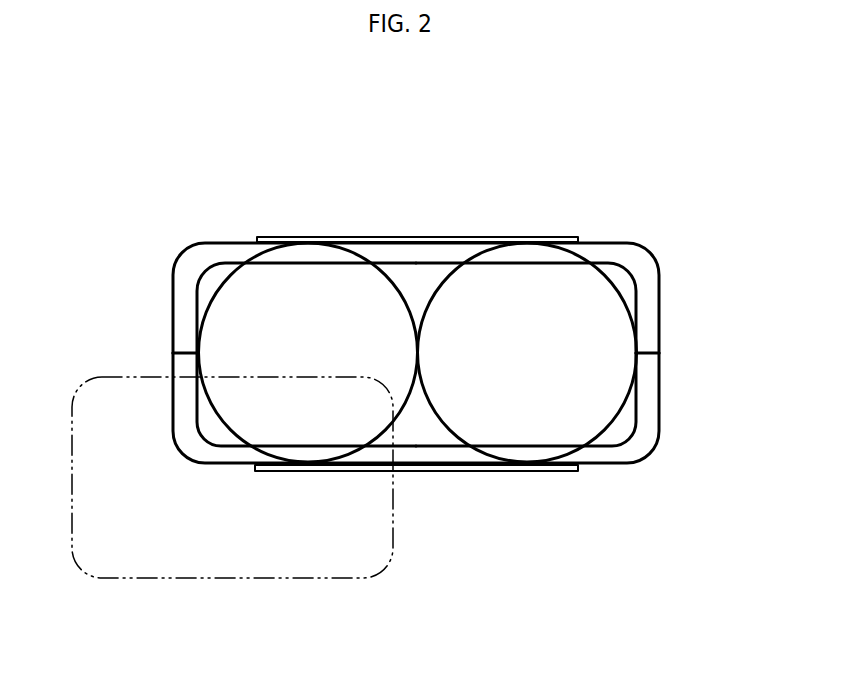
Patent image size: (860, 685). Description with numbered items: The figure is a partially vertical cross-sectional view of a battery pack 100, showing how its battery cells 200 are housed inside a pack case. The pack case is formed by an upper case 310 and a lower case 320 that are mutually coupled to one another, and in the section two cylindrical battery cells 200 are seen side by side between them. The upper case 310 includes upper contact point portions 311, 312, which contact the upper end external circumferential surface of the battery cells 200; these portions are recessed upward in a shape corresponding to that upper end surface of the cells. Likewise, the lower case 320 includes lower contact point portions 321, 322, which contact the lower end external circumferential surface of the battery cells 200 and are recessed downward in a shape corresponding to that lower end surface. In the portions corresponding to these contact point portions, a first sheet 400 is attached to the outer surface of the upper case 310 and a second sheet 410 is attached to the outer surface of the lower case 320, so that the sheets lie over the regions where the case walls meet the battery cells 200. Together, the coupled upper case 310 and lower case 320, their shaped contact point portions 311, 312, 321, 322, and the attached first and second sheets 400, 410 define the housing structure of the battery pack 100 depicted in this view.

The battery pack 100 is at (121, 137).
The battery cell 200 is at (220, 330).
The upper case 310 is at (210, 252).
The upper contact point portion 311 is at (307, 242).
The upper contact point portion 312 is at (527, 240).
The lower case 320 is at (210, 452).
The lower contact point portion 321 is at (305, 470).
The lower contact point portion 322 is at (523, 473).
The first sheet 400 is at (415, 237).
The second sheet 410 is at (442, 473).